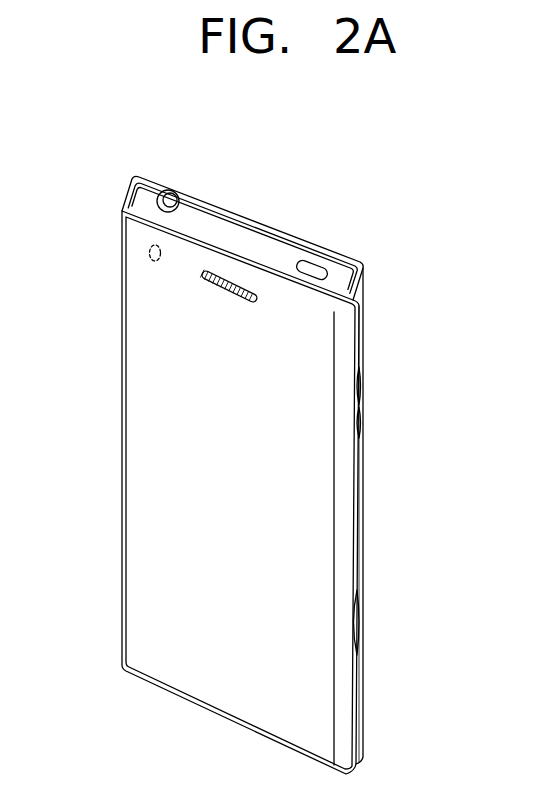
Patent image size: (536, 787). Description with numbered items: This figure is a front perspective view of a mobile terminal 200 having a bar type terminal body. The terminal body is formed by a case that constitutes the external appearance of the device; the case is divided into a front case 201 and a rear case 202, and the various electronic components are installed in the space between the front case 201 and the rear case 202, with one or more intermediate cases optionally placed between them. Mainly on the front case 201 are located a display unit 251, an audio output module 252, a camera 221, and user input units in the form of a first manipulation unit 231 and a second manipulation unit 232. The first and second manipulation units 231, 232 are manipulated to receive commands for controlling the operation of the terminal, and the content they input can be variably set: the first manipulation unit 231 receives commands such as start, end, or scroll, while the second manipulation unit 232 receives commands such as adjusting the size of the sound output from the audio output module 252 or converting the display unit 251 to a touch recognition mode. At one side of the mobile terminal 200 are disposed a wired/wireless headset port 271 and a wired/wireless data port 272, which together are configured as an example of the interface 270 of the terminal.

The mobile terminal 200 is at (393, 235).
The front case 201 is at (345, 340).
The rear case 202 is at (363, 308).
The camera 221 is at (150, 246).
The first manipulation unit 231 is at (360, 621).
The second manipulation unit 232 is at (360, 445).
The display unit 251 is at (150, 438).
The audio output module 252 is at (228, 282).
The interface 270 is at (337, 104).
The wired/wireless headset port 271 is at (172, 200).
The wired/wireless data port 272 is at (310, 268).